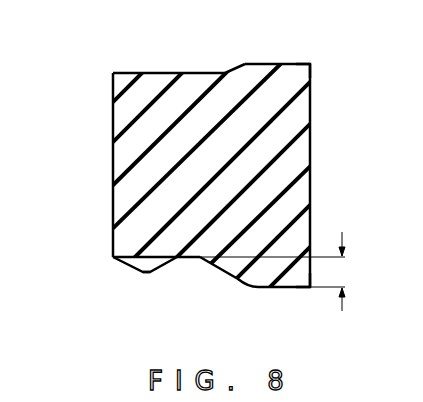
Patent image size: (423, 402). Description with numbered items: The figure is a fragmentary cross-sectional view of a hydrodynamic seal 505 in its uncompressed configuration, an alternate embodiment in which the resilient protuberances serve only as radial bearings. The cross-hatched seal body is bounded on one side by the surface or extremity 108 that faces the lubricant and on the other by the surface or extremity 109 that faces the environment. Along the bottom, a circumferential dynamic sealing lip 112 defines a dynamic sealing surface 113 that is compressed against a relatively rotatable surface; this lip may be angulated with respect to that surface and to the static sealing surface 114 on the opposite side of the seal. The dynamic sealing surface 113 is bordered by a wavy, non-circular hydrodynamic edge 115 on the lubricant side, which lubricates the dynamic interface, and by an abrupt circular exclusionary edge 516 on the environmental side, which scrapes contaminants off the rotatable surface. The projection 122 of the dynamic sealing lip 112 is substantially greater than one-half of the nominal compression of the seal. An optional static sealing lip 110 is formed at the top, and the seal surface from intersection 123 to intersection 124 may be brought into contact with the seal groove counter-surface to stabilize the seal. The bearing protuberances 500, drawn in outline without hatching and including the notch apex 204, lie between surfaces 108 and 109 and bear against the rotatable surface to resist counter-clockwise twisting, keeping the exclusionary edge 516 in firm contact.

The lubricant-side surface 108 is at (112, 162).
The environmental-side surface 109 is at (311, 140).
The static sealing lip 110 is at (262, 72).
The dynamic sealing lip 112 is at (263, 279).
The dynamic sealing surface 113 is at (288, 288).
The static sealing surface 114 is at (279, 63).
The hydrodynamic edge 115 is at (219, 269).
The projection of the dynamic sealing lip 122 is at (339, 271).
The intersection 123 is at (112, 72).
The intersection 124 is at (312, 64).
The notch apex 204 is at (146, 275).
The bearing protuberances 500 is at (132, 267).
The hydrodynamic seal 505 is at (239, 167).
The exclusionary edge 516 is at (311, 290).